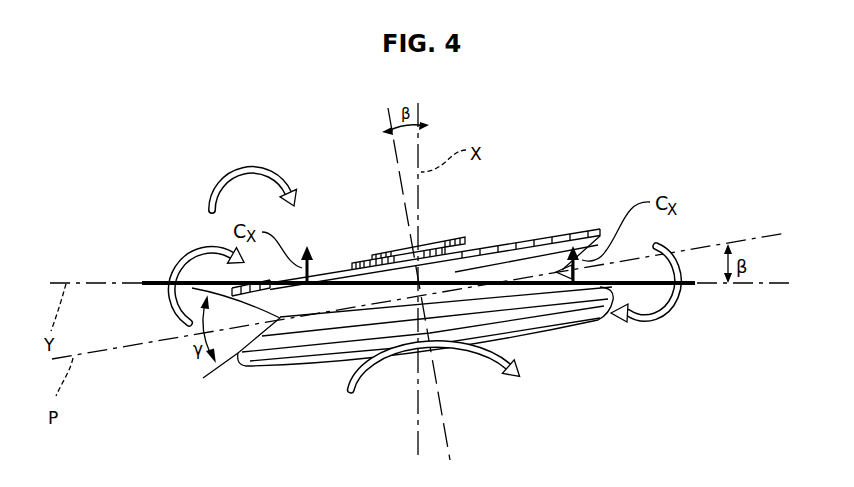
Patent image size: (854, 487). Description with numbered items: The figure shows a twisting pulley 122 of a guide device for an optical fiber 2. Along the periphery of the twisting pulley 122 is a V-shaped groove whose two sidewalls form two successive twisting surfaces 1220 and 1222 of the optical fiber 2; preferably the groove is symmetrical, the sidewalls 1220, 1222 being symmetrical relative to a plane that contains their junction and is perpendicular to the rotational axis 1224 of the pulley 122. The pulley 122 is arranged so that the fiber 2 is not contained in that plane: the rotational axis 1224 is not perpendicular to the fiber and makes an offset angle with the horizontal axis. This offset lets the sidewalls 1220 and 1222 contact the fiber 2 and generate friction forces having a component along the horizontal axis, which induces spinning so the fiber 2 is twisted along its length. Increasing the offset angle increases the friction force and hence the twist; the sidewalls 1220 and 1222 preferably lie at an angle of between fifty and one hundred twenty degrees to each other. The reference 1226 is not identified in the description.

The optical fiber 2 is at (156, 281).
The twisting pulley 122 is at (402, 276).
The twisting surface 1220 is at (308, 329).
The twisting surface 1222 is at (333, 295).
The rotational axis 1224 is at (392, 170).
The horizontal reference axis 1226 is at (110, 281).